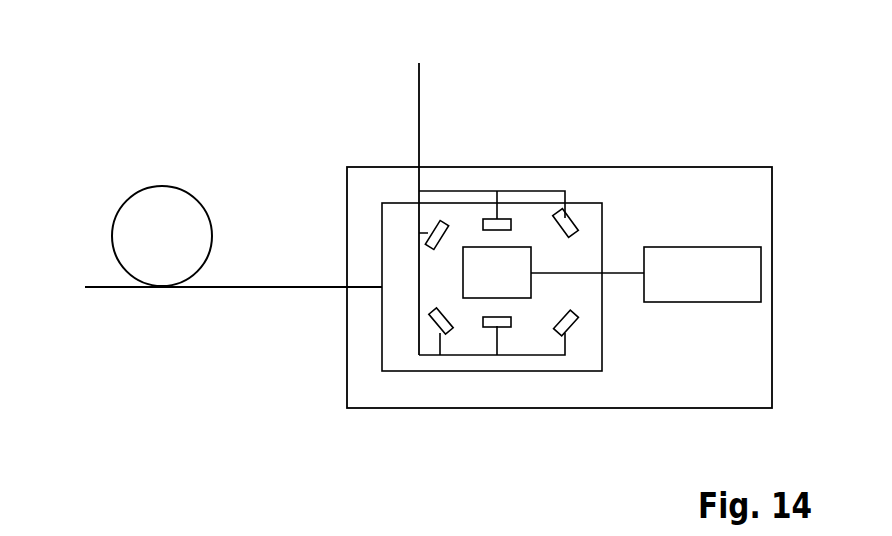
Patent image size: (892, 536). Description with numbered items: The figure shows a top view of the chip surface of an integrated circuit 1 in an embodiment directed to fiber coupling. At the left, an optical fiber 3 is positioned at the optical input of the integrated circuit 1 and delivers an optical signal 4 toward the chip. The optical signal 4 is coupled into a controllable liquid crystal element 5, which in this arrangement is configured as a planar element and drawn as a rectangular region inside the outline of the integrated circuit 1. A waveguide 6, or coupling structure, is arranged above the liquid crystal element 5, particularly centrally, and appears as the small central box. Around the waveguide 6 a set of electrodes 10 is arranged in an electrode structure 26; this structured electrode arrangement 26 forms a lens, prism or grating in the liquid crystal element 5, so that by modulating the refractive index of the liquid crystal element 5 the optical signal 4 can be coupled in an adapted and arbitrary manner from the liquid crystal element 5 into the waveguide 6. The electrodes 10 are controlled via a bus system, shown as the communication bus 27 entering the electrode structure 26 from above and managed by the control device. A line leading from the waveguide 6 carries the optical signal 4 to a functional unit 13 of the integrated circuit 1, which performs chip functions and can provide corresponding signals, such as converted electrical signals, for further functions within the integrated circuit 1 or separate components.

The integrated circuit 1 is at (624, 408).
The optical fiber 3 is at (113, 220).
The optical signal 4 is at (621, 273).
The liquid crystal element 5 is at (396, 196).
The waveguide 6 is at (517, 288).
The electrodes 10 is at (572, 226).
The functional unit 13 is at (708, 302).
The electrode structure 26 is at (514, 164).
The communication bus 27 is at (422, 83).